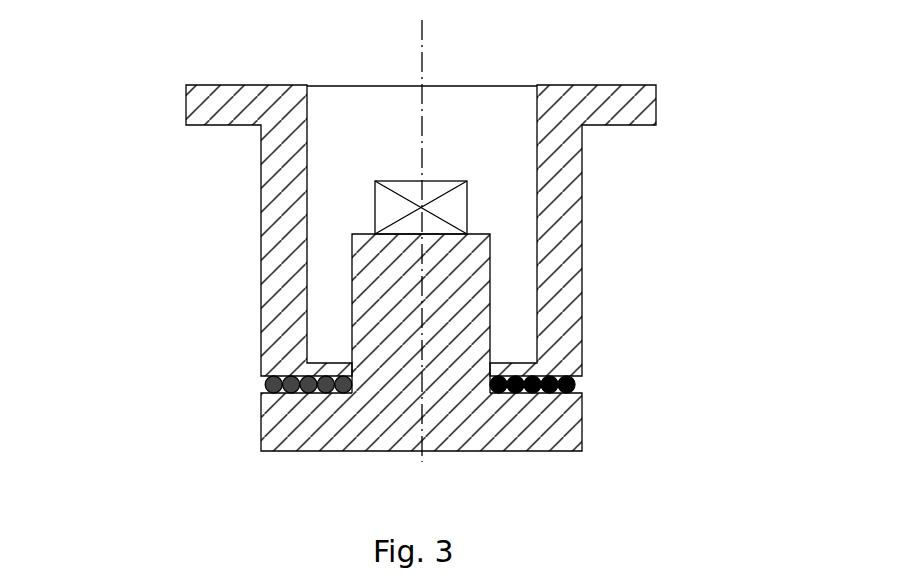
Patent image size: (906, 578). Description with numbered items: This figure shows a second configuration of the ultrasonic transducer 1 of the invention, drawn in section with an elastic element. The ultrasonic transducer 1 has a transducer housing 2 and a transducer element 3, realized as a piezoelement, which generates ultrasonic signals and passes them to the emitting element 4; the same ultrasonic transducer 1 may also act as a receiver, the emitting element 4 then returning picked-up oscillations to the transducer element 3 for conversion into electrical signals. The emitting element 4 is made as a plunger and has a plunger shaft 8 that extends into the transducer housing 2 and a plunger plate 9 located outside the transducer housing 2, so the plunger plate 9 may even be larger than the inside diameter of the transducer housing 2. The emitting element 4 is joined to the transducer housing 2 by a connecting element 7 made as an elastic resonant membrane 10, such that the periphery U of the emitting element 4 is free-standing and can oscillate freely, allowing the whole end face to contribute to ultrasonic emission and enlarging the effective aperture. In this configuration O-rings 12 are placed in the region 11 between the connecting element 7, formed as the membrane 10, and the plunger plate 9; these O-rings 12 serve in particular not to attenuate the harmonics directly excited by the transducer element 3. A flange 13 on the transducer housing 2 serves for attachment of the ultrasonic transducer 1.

The ultrasonic transducer 1 is at (556, 53).
The transducer housing 2 is at (472, 226).
The transducer element 3 is at (457, 208).
The emitting element 4 is at (509, 337).
The plunger shaft 8 is at (480, 282).
The plunger plate 9 is at (555, 429).
The connecting element 7 is at (629, 339).
The membrane 10 is at (629, 339).
The region 11 is at (248, 386).
The O-rings 12 is at (573, 382).
The flange 13 is at (640, 103).
The periphery U is at (250, 433).